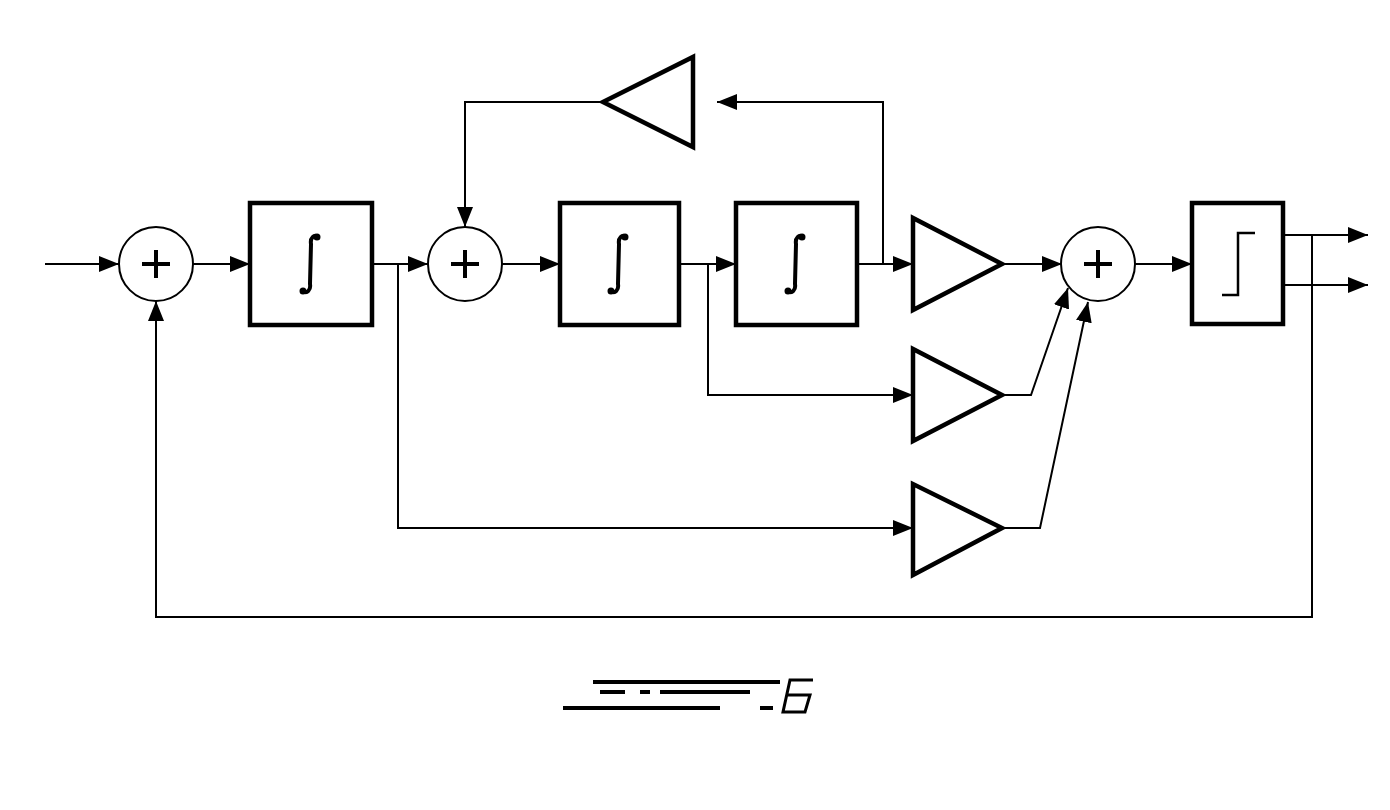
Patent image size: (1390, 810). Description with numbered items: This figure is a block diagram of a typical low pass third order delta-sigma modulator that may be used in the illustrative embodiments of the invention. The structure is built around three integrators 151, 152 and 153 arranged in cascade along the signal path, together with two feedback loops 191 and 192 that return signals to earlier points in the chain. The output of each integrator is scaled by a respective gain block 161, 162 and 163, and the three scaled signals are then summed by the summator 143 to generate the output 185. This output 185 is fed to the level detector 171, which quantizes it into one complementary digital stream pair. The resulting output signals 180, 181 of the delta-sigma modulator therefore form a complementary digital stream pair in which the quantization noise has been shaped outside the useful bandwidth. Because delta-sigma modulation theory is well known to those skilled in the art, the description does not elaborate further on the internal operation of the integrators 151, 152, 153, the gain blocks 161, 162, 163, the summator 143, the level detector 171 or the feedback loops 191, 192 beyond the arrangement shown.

The summator 143 is at (1099, 227).
The first integrator 151 is at (312, 203).
The second integrator 152 is at (615, 203).
The third integrator 153 is at (808, 203).
The gain block 161 is at (965, 240).
The gain block 162 is at (965, 373).
The gain block 163 is at (965, 506).
The level detector 171 is at (1218, 326).
The output signal 180 is at (1350, 290).
The output signal 181 is at (1320, 235).
The output 185 is at (1150, 266).
The feedback loop 191 is at (810, 102).
The feedback loop 192 is at (1098, 620).